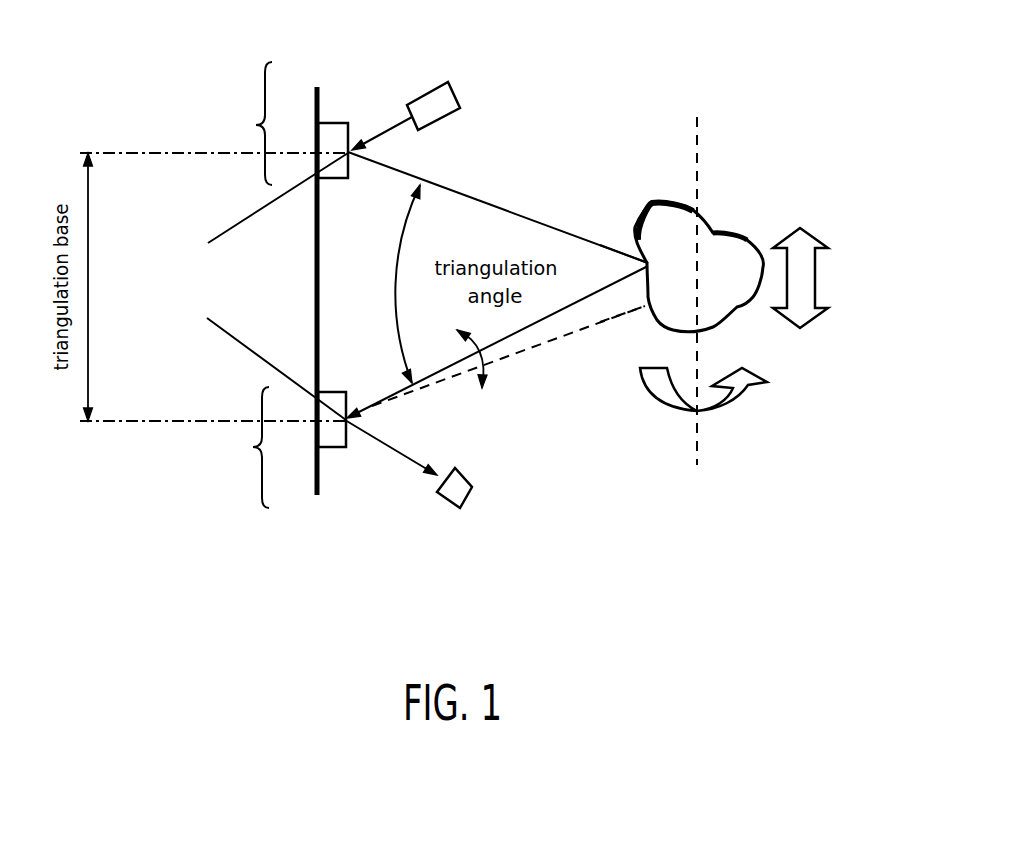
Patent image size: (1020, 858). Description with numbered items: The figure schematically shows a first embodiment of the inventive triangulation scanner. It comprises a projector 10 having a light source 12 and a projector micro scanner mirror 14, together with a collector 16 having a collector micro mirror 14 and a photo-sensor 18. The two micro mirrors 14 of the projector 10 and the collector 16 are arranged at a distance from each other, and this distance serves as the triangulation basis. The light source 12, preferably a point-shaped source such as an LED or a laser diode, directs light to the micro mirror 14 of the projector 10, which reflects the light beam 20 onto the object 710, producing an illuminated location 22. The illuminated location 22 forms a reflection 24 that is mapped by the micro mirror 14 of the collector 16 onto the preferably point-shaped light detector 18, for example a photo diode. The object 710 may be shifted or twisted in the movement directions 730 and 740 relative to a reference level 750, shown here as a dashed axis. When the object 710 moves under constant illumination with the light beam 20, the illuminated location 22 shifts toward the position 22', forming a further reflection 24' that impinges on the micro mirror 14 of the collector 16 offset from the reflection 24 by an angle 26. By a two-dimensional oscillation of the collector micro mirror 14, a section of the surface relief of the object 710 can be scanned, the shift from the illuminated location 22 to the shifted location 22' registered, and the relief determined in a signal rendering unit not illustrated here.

The projector 10 is at (256, 125).
The light source 12 is at (432, 100).
The micro mirror 14 is at (264, 286).
The collector 16 is at (253, 447).
The photo-sensor 18 is at (457, 500).
The light beam 20 is at (390, 127).
The illuminated location 22 is at (624, 185).
The shifted illuminated location 22' is at (609, 361).
The reflection 24 is at (496, 412).
The further reflection 24' is at (508, 411).
The angle 26 is at (472, 363).
The object 710 is at (723, 253).
The movement direction 730 is at (807, 278).
The movement direction 740 is at (727, 412).
The reference level 750 is at (698, 163).